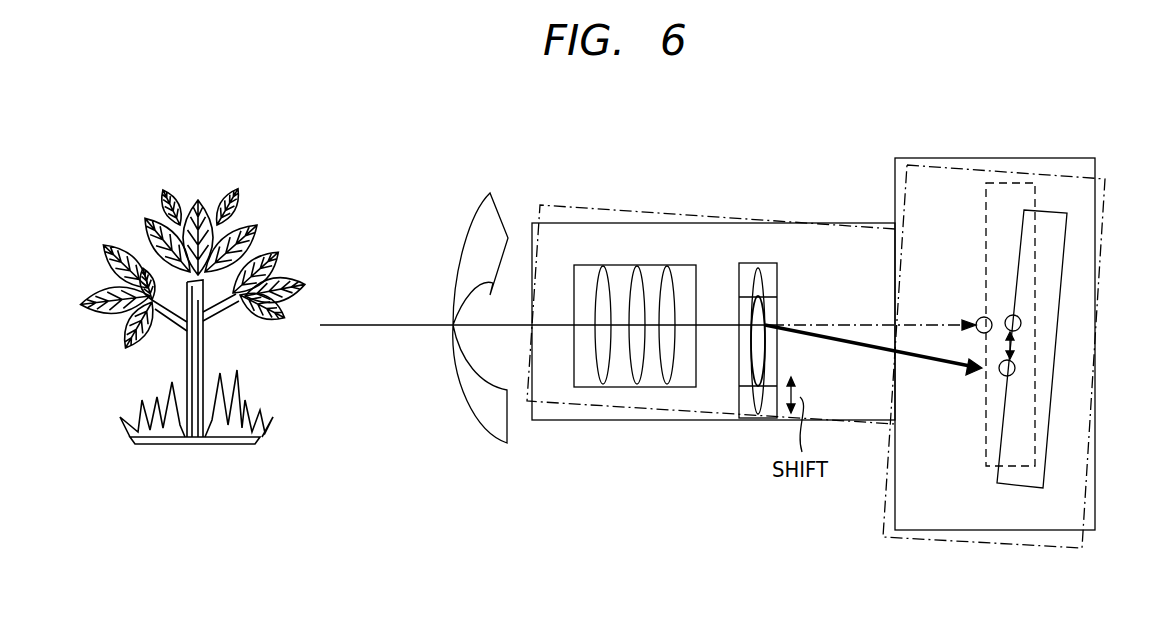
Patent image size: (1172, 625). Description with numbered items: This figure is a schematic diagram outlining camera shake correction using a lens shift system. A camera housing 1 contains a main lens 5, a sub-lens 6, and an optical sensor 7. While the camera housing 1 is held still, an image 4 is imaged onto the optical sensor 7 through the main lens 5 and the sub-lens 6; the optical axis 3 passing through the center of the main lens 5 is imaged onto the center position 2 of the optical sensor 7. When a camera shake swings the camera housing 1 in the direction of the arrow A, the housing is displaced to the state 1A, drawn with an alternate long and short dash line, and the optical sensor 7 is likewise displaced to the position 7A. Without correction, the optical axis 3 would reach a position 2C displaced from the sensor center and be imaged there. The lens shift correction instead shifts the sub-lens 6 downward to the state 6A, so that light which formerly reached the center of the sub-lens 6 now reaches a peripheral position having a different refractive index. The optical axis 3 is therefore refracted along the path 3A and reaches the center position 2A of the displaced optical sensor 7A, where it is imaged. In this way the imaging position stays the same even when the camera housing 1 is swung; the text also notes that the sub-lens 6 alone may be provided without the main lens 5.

The camera housing 1 is at (568, 222).
The displaced state of camera housing 1A is at (608, 208).
The center position of optical sensor 2 is at (980, 317).
The center position of displaced optical sensor 2A is at (1015, 367).
The displaced imaging position 2C is at (1021, 323).
The optical axis 3 is at (840, 324).
The refracted optical axis 3A is at (855, 340).
The image 4 is at (196, 447).
The main lens 5 is at (653, 390).
The sub-lens 6 is at (758, 266).
The shifted state of sub-lens 6A is at (760, 418).
The optical sensor 7 is at (1020, 185).
The displaced position of optical sensor 7A is at (1043, 475).
The arrow A is at (1128, 189).